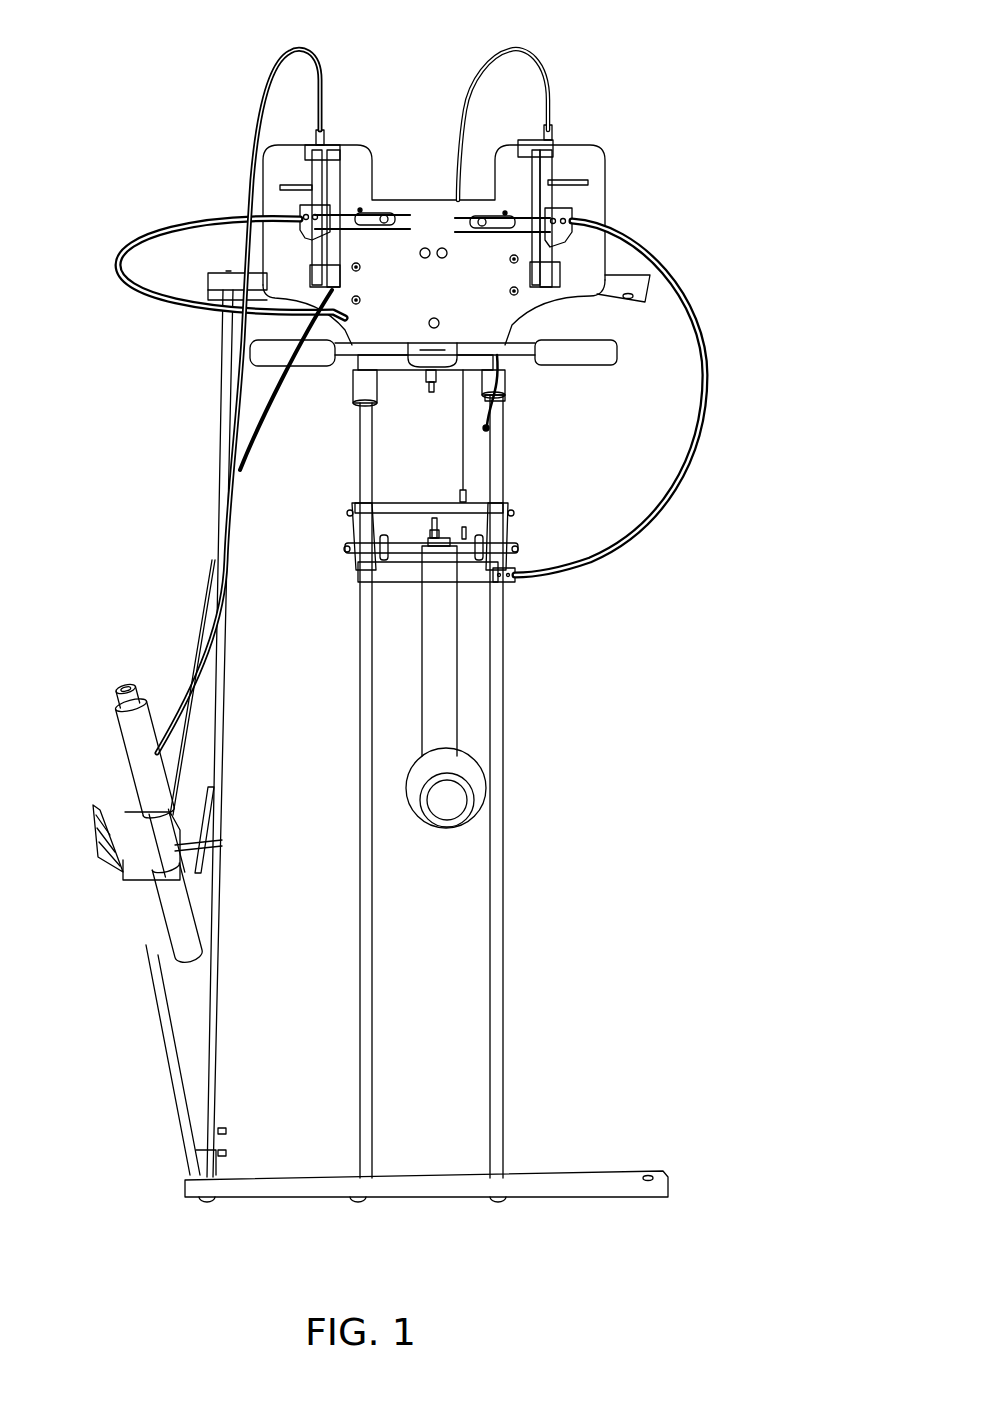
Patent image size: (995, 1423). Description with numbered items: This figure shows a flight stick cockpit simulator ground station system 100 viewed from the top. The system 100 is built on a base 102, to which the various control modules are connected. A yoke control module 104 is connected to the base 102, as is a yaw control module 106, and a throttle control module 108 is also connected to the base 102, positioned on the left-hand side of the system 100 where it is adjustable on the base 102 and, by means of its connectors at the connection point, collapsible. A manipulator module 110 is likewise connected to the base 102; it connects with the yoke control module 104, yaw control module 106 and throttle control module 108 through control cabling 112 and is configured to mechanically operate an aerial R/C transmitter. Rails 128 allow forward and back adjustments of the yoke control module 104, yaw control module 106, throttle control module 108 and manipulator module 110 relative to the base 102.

The flight stick cockpit simulator ground station system 100 is at (624, 30).
The base 102 is at (638, 281).
The yoke control module 104 is at (457, 705).
The yaw control module 106 is at (508, 360).
The throttle control module 108 is at (132, 748).
The manipulator module 110 is at (603, 150).
The control cabling 112 is at (320, 92).
The rails 128 is at (503, 1000).